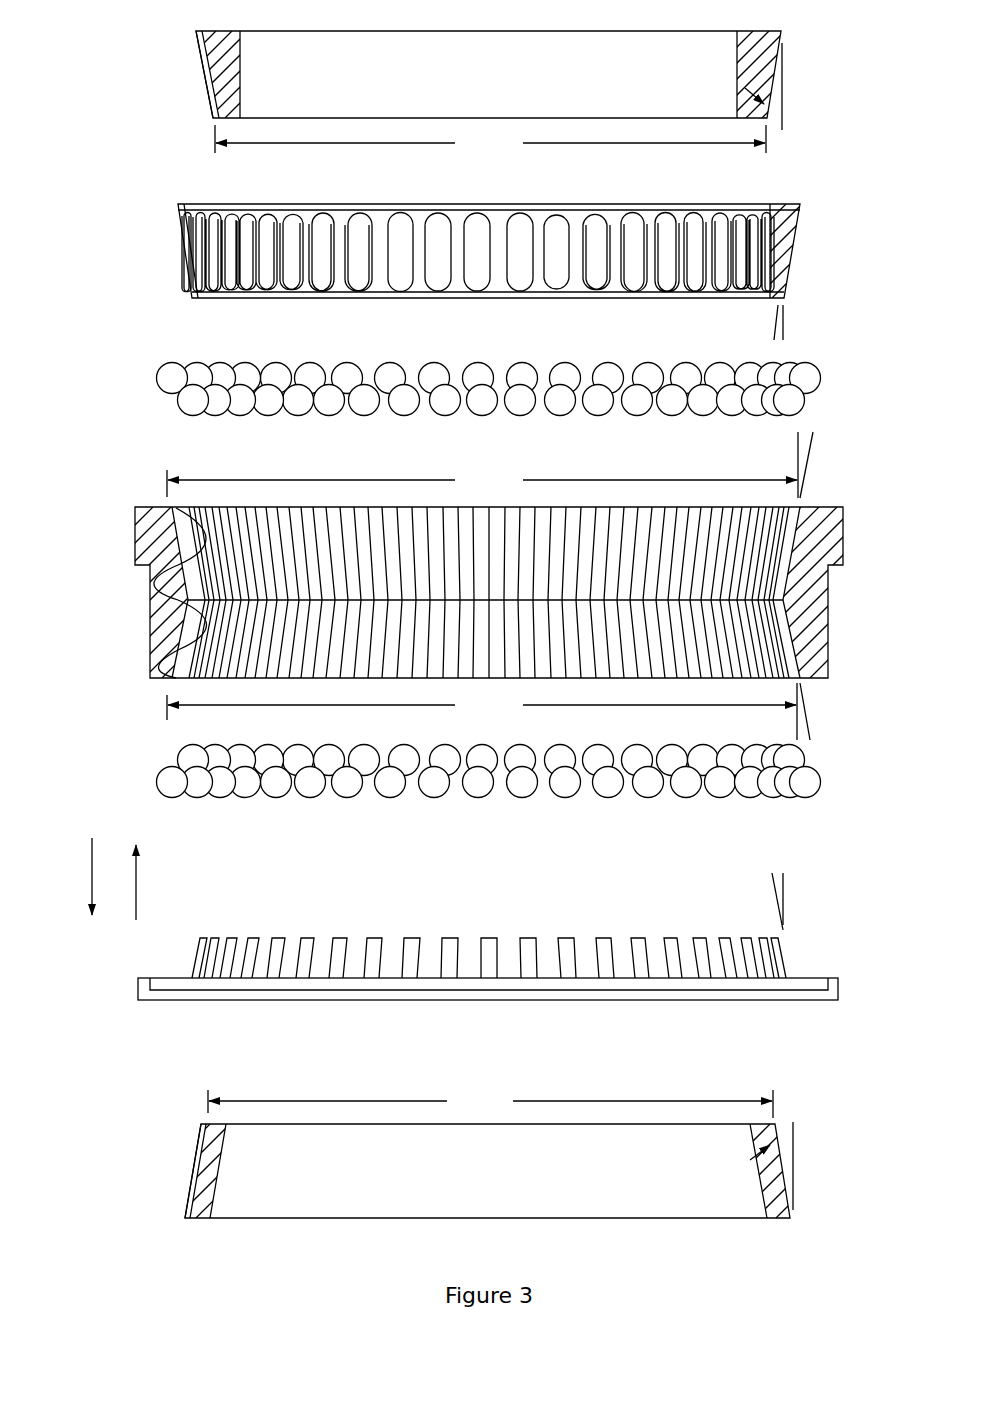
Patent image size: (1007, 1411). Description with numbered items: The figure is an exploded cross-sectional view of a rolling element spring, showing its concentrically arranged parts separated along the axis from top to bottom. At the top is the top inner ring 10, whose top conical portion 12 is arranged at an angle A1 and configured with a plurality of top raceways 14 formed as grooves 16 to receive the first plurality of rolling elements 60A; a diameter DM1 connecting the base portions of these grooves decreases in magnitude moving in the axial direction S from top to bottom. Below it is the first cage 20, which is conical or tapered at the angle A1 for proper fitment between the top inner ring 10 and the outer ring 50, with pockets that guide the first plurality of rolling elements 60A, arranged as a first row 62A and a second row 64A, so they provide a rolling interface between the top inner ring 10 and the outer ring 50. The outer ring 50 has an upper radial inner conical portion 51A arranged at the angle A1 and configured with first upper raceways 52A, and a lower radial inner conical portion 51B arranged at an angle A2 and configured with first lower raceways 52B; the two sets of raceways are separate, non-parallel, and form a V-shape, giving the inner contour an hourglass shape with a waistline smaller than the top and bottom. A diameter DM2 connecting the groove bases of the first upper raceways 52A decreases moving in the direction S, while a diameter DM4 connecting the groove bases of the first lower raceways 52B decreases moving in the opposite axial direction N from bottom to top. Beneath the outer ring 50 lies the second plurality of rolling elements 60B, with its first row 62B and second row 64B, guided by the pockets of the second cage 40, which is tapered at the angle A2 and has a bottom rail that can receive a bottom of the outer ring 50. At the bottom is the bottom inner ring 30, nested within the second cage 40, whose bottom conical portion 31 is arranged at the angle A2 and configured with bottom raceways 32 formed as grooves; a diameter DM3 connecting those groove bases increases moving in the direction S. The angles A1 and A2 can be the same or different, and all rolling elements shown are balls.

The top inner ring 10 is at (176, 36).
The top conical portion 12 is at (202, 80).
The top raceways 14 is at (148, 74).
The grooves 16 is at (214, 107).
The first cage 20 is at (174, 243).
The bottom inner ring 30 is at (180, 1140).
The bottom conical portion 31 is at (196, 1172).
The bottom raceways 32 is at (192, 1200).
The second cage 40 is at (138, 988).
The outer ring 50 is at (133, 540).
The upper radial inner conical portion 51A is at (182, 543).
The first upper raceways 52A is at (182, 584).
The lower radial inner conical portion 51B is at (182, 633).
The first lower raceways 52B is at (175, 672).
The first plurality of rolling elements 60A is at (426, 380).
The first row 62A is at (166, 375).
The second row 64A is at (190, 402).
The second plurality of rolling elements 60B is at (446, 753).
The first row 62B is at (186, 752).
The second row 64B is at (176, 760).
The diameter DM1 is at (490, 140).
The diameter DM2 is at (482, 482).
The diameter DM3 is at (490, 1103).
The diameter DM4 is at (481, 706).
The angle A1 is at (787, 108).
The angle A2 is at (772, 700).
The axial direction S is at (92, 870).
The axial direction N is at (136, 878).